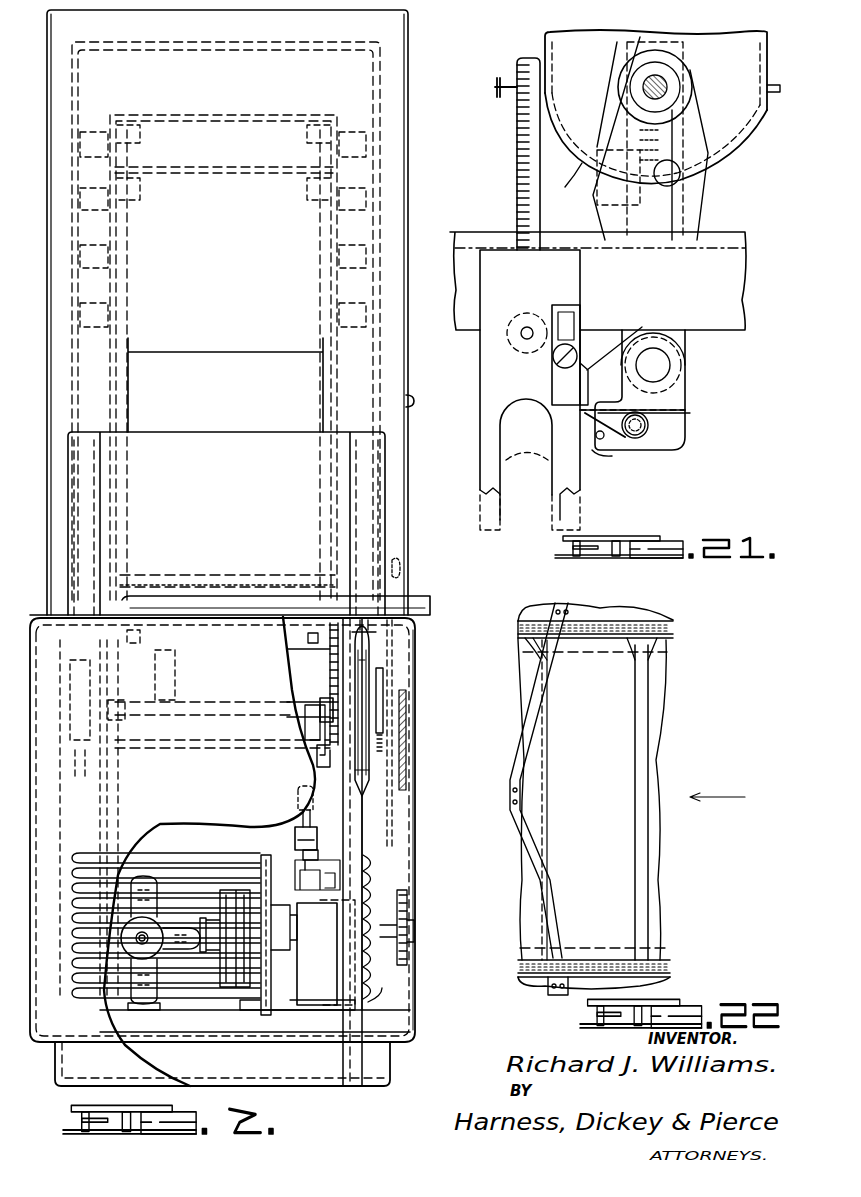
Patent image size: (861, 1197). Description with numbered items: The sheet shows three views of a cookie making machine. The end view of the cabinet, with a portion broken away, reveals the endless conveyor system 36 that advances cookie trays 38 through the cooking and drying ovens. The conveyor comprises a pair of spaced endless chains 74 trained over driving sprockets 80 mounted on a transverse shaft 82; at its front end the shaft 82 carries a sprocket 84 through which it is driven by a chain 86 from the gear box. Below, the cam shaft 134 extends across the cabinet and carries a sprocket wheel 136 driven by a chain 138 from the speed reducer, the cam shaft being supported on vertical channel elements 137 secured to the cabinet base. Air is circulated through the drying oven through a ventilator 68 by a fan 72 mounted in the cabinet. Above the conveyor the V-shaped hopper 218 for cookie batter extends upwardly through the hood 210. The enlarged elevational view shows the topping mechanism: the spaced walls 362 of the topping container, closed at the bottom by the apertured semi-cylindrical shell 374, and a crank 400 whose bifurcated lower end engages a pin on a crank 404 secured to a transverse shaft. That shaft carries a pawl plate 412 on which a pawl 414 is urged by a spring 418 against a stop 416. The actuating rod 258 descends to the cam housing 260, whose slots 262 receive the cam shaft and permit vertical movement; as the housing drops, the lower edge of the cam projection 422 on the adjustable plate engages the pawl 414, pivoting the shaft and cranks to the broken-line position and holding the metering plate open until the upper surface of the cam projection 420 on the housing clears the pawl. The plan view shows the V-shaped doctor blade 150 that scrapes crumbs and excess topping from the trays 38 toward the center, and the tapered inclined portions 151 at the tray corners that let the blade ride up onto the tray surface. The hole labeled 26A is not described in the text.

In FIG. 3, the endless conveyor system 36 is at (338, 115).
In FIG. 3, the V-shaped hopper 218 is at (194, 352).
In FIG. 3, the hood 210 is at (188, 432).
In FIG. 3, the endless chains 74 is at (120, 520).
In FIG. 22, the endless chains 74 is at (602, 624).
In FIG. 3, the driving sprockets 80 is at (120, 578).
In FIG. 3, the shaft 82 is at (212, 576).
In FIG. 3, the sprocket 84 is at (398, 566).
In FIG. 3, the chain 86 is at (385, 660).
In FIG. 3, the sprocket wheel 136 is at (398, 697).
In FIG. 3, the cam shaft 134 is at (310, 706).
In FIG. 3, the chain 138 is at (403, 768).
In FIG. 3, the channel elements 137 is at (347, 828).
In FIG. 3, the ventilator 68 is at (80, 866).
In FIG. 3, the fan 72 is at (146, 882).
In FIG. 21, the spaced walls 362 is at (726, 32).
In FIG. 21, the actuating rod 258 is at (517, 163).
In FIG. 21, the crank 400 is at (690, 103).
In FIG. 21, the crank 404 is at (687, 220).
In FIG. 21, the semi-cylindrical shell 374 is at (618, 181).
In FIG. 21, the cam housing 260 is at (480, 380).
In FIG. 21, the slots 262 is at (500, 430).
In FIG. 21, the pivot hole 26A is at (507, 338).
In FIG. 21, the cam projection 420 is at (585, 362).
In FIG. 21, the cam projection 422 is at (624, 341).
In FIG. 21, the pawl plate 412 is at (688, 384).
In FIG. 21, the pawl 414 is at (670, 410).
In FIG. 21, the spring 418 is at (660, 432).
In FIG. 21, the stop 416 is at (612, 456).
In FIG. 22, the V-shaped doctor blade 150 is at (530, 726).
In FIG. 22, the cookie trays 38 is at (658, 740).
In FIG. 22, the inclined portions 151 is at (660, 652).